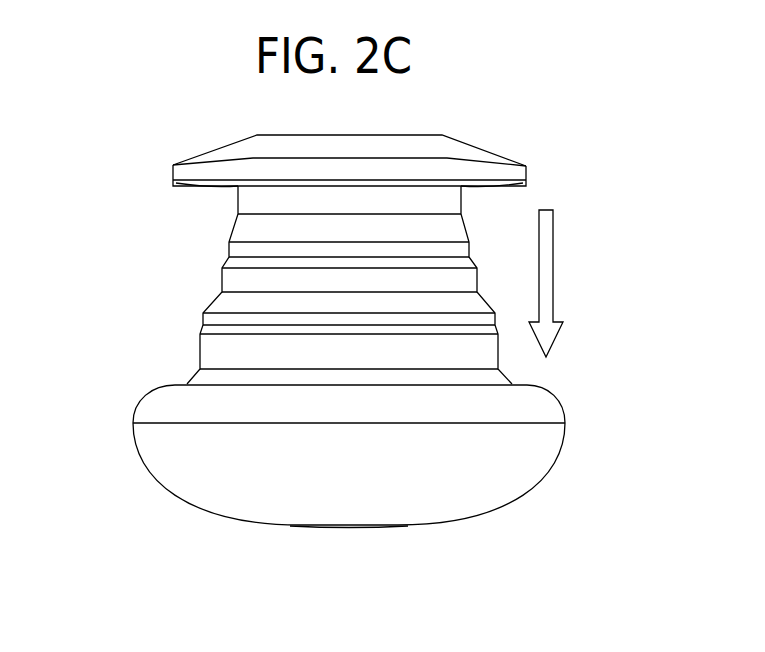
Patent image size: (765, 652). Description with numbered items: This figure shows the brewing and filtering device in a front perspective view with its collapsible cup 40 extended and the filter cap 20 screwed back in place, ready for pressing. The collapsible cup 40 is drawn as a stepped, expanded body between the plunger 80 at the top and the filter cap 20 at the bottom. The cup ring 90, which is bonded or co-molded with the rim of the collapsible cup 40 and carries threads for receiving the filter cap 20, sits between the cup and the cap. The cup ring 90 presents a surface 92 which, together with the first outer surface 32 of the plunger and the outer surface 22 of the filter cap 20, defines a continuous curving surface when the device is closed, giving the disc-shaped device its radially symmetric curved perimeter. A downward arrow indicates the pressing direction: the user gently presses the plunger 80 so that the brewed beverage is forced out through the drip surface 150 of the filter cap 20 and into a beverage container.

The filter cap 20 is at (565, 443).
The outer surface of the filter cap 22 is at (135, 442).
The first outer surface of the plunger 32 is at (210, 152).
The collapsible cup 40 is at (222, 275).
The plunger 80 is at (490, 152).
The cup ring 90 is at (553, 395).
The surface of the cup ring 92 is at (145, 397).
The drip surface 150 is at (355, 527).